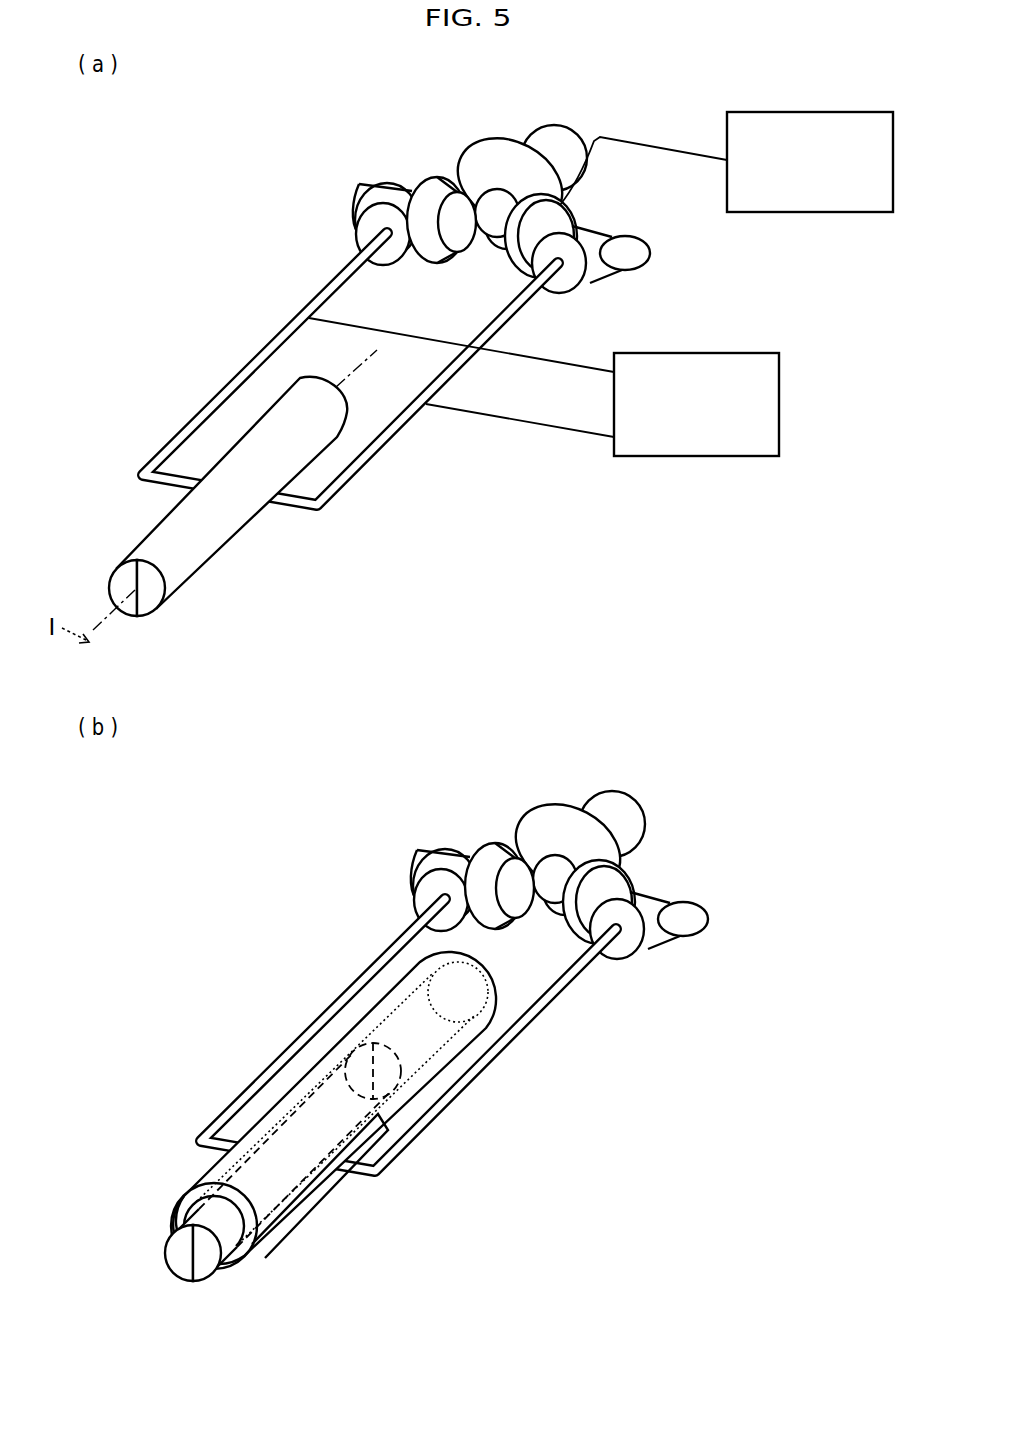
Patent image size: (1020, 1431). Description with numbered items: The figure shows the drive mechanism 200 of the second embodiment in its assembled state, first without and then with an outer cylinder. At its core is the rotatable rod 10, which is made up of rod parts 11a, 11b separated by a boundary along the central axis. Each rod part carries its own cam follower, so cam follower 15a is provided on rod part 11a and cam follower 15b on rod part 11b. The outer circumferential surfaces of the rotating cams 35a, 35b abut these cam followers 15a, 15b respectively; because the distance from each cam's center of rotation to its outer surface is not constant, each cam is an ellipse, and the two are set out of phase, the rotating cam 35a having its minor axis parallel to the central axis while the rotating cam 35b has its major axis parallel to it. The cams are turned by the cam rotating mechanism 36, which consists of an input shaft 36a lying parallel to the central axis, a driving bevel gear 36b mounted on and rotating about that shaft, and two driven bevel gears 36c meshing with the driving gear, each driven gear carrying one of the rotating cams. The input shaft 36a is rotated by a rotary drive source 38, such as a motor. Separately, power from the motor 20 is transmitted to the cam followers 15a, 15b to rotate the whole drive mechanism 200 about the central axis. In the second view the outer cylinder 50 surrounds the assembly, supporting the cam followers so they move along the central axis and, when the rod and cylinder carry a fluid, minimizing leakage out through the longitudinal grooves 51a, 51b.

The drive mechanism 200 is at (309, 99).
The rotatable rod 10 is at (225, 854).
The rod part 11a is at (156, 607).
The rod part 11b is at (122, 586).
The cam follower 15a is at (577, 283).
The cam follower 15b is at (367, 235).
The motor 20 is at (749, 353).
The rotating cam 35a is at (634, 260).
The rotating cam 35b is at (358, 203).
The cam rotating mechanism 36 is at (524, 523).
The input shaft 36a is at (567, 140).
The driving bevel gear 36b is at (507, 137).
The driven bevel gear 36c is at (437, 187).
The rotary drive source 38 is at (862, 112).
The outer cylinder 50 is at (304, 1110).
The longitudinal groove 51a is at (254, 1244).
The longitudinal groove 51b is at (176, 1218).